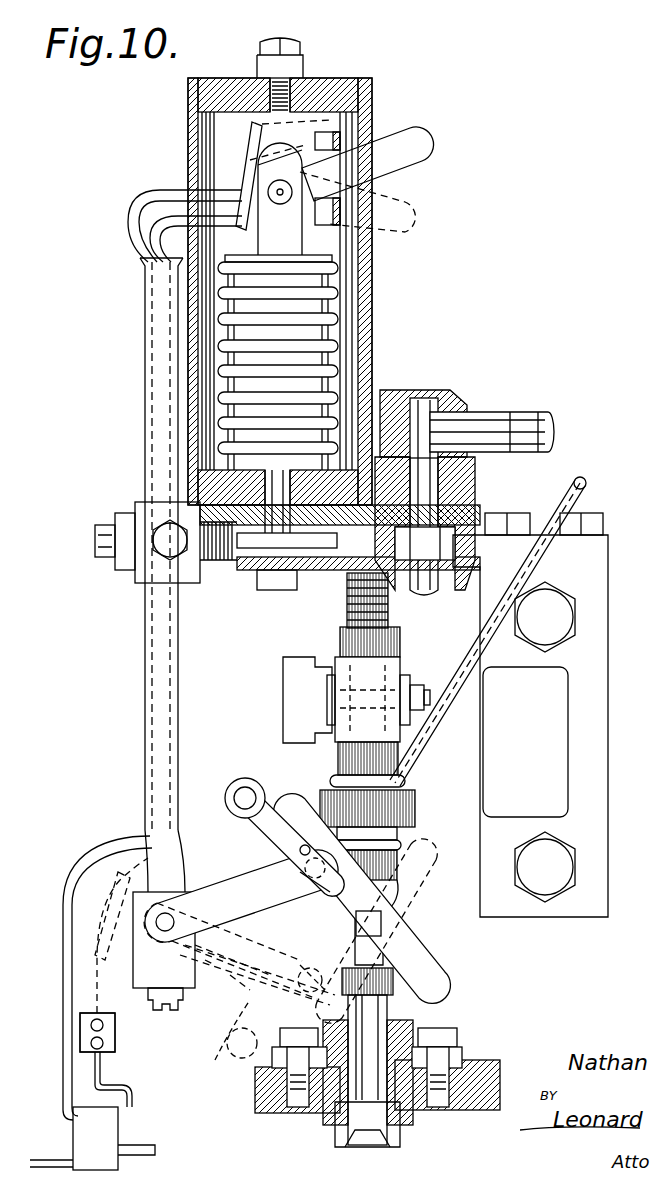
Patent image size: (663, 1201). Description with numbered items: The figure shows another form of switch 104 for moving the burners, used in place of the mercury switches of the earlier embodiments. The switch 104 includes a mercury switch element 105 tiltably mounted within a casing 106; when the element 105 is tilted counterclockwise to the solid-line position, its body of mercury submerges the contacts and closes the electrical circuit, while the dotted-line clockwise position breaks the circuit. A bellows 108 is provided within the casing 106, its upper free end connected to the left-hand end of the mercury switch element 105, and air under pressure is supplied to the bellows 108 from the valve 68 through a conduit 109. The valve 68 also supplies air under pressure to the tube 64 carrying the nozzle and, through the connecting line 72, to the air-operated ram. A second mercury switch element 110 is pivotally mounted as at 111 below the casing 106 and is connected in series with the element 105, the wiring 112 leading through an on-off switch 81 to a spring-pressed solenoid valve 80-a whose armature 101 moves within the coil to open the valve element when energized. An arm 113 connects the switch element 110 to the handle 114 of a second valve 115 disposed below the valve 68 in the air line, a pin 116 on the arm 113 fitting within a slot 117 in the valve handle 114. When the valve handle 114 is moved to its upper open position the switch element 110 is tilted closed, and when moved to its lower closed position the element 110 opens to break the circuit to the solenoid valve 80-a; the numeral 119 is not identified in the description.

The switch 104 is at (370, 325).
The casing 106 is at (372, 285).
The armature 101 is at (338, 213).
The mercury switch element 105 is at (415, 150).
The bellows 108 is at (230, 338).
The wiring 112 is at (163, 840).
The on-off switch 81 is at (115, 1043).
The solenoid valve 80-a is at (118, 1135).
The conduit 109 is at (310, 545).
The tube 64 is at (553, 408).
The connecting line 72 is at (428, 700).
The valve 68 is at (350, 690).
The second valve 115 is at (412, 930).
The second mercury switch element 110 is at (250, 863).
The pivot 111 is at (265, 945).
The valve handle 114 is at (263, 790).
The slot 117 is at (320, 895).
The pin 116 is at (305, 845).
The arm 113 is at (282, 885).
The pivot position 119 is at (235, 1045).